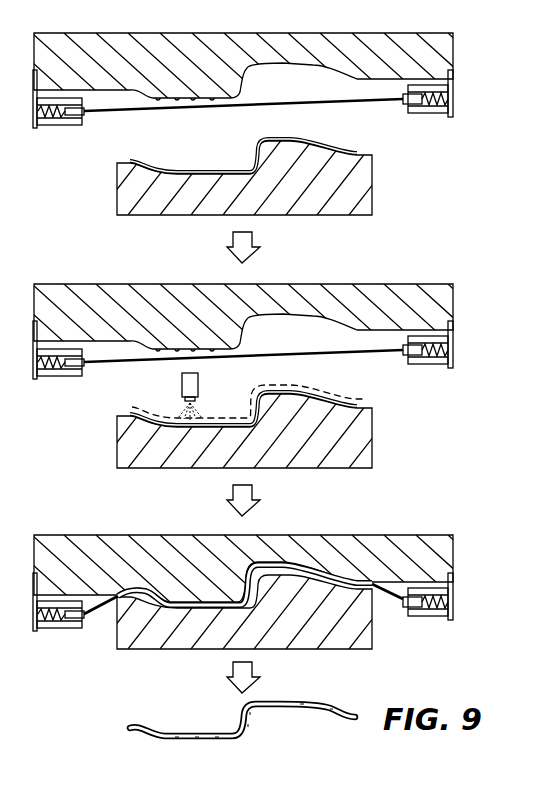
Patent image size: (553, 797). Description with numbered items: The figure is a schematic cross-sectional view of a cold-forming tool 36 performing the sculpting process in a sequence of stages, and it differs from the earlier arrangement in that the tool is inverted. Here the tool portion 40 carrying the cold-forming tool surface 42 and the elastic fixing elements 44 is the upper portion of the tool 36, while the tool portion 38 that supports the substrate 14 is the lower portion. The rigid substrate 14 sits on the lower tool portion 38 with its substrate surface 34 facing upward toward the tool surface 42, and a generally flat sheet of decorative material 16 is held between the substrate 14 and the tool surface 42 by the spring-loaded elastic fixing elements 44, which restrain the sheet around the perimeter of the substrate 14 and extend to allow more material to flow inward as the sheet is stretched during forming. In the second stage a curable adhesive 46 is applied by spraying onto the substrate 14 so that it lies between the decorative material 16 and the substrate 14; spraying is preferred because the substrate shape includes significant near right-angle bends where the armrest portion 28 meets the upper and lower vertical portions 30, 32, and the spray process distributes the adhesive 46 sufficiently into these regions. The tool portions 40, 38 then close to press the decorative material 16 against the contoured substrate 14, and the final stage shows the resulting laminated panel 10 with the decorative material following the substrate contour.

The panel 10 is at (98, 740).
The substrate 14 is at (234, 157).
The sheet of decorative material 16 is at (247, 105).
The armrest portion 28 is at (254, 163).
The upper vertical portion 30 is at (160, 165).
The lower vertical portion 32 is at (310, 141).
The substrate surface 34 is at (177, 170).
The cold-forming tool 36 is at (262, 96).
The tool portion 38 is at (130, 197).
The tool portion 40 is at (102, 77).
The cold-forming tool surface 42 is at (243, 73).
The elastic fixing element 44 is at (433, 115).
The curable adhesive 46 is at (310, 385).